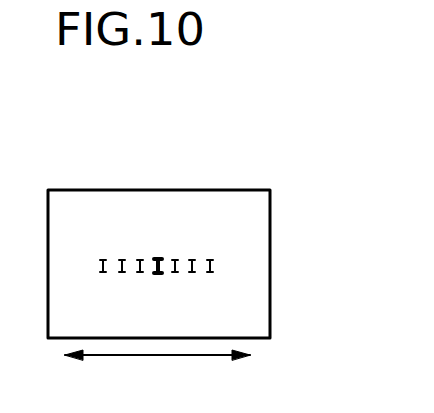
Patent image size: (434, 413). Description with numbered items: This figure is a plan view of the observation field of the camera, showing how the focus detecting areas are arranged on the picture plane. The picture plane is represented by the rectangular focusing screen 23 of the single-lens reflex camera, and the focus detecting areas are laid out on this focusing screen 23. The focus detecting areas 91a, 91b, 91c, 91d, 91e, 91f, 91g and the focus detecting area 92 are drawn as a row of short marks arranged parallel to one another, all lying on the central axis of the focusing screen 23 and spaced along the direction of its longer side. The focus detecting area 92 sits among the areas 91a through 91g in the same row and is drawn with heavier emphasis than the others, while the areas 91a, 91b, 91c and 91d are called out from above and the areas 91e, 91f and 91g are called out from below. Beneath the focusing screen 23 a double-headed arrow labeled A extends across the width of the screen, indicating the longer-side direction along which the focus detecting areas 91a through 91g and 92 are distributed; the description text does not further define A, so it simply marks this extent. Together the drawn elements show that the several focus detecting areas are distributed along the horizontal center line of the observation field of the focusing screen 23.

The focusing screen 23 is at (270, 260).
The focus detecting area 91a is at (102, 260).
The focus detecting area 91b is at (121, 260).
The focus detecting area 91c is at (139, 261).
The focus detecting area 91d is at (160, 262).
The focus detecting area 91e is at (175, 272).
The focus detecting area 91f is at (193, 272).
The focus detecting area 91g is at (210, 272).
The focus detecting area 92 is at (157, 272).
The dimension A is at (147, 357).